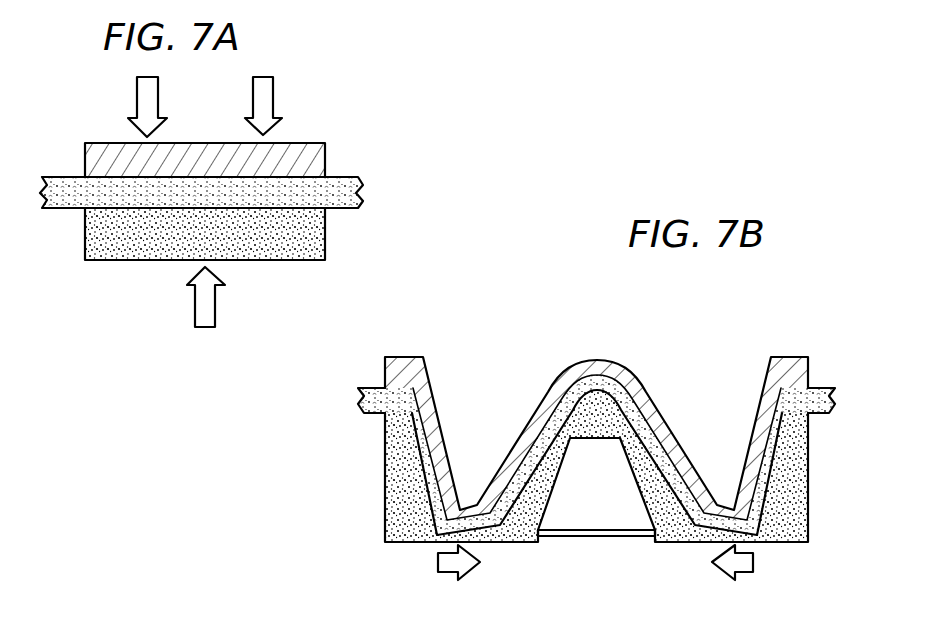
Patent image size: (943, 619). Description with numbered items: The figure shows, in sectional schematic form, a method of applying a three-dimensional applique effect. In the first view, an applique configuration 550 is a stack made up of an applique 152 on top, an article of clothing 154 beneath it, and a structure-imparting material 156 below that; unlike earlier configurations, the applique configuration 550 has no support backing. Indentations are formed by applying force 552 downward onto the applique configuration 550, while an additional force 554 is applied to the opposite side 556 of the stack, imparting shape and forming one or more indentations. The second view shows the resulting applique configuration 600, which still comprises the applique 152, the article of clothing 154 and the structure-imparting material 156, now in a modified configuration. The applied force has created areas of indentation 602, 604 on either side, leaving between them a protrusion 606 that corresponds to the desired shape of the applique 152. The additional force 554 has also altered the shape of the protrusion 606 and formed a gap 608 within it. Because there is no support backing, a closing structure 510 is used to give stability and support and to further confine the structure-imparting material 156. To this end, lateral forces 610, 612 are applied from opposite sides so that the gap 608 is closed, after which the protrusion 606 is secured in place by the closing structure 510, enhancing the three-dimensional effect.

In FIG. 7A, the applique configuration 550 is at (390, 111).
In FIG. 7A, the applique 152 is at (325, 166).
In FIG. 7B, the applique 152 is at (385, 373).
In FIG. 7A, the article of clothing 154 is at (360, 183).
In FIG. 7B, the article of clothing 154 is at (358, 402).
In FIG. 7A, the structure-imparting material 156 is at (85, 236).
In FIG. 7B, the structure-imparting material 156 is at (385, 478).
In FIG. 7A, the force 552 is at (137, 96).
In FIG. 7A, the additional force 554 is at (195, 305).
In FIG. 7A, the opposite side 556 is at (275, 261).
In FIG. 7B, the applique configuration 600 is at (688, 318).
In FIG. 7B, the area of indentation 602 is at (470, 412).
In FIG. 7B, the area of indentation 604 is at (735, 412).
In FIG. 7B, the protrusion 606 is at (602, 400).
In FIG. 7B, the gap 608 is at (585, 508).
In FIG. 7B, the closing structure 510 is at (625, 538).
In FIG. 7B, the lateral force 610 is at (437, 565).
In FIG. 7B, the lateral force 612 is at (755, 567).